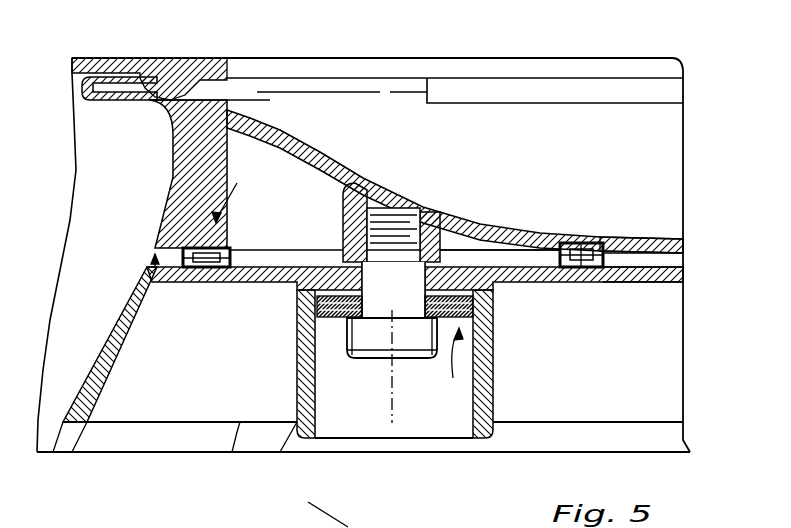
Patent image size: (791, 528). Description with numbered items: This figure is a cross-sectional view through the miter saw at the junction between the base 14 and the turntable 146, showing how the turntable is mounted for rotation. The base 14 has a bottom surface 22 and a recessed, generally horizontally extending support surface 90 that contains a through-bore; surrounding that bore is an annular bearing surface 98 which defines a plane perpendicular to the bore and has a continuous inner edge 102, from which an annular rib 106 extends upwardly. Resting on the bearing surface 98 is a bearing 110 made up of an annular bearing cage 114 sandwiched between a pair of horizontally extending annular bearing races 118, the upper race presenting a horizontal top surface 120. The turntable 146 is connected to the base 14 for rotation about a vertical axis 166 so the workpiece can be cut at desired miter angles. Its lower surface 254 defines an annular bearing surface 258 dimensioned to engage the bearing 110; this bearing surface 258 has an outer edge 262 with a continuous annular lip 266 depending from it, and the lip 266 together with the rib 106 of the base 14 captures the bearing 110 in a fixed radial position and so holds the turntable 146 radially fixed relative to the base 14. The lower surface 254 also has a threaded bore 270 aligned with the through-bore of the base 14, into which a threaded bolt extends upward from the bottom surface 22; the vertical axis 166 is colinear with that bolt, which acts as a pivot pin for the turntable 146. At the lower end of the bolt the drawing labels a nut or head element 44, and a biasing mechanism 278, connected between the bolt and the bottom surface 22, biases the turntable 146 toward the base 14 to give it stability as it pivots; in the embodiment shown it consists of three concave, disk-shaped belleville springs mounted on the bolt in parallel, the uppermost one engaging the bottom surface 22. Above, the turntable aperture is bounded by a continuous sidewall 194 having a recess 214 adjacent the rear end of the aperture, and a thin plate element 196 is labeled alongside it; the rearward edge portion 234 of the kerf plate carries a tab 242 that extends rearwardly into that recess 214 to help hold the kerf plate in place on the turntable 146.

The base 14 is at (683, 272).
The bottom surface 22 is at (330, 320).
The nut 44 is at (418, 293).
The support surface 90 is at (152, 263).
The annular bearing surface 98 is at (183, 297).
The inner edge 102 is at (204, 270).
The annular rib 106 is at (562, 262).
The bearing 110 is at (242, 197).
The bearing cage 114 is at (600, 243).
The bearing races 118 is at (567, 243).
The top surface 120 is at (590, 243).
The turntable 146 is at (687, 244).
The vertical axis 166 is at (392, 394).
The continuous sidewall 194 is at (400, 210).
The thin plate 196 is at (237, 253).
The recess 214 is at (187, 77).
The rearward edge portion 234 is at (168, 83).
The tab 242 is at (120, 60).
The lower surface 254 is at (317, 157).
The annular bearing surface 258 is at (223, 248).
The outer edge 262 is at (187, 245).
The annular lip 266 is at (180, 255).
The threaded bore 270 is at (367, 185).
The biasing mechanism 278 is at (441, 372).